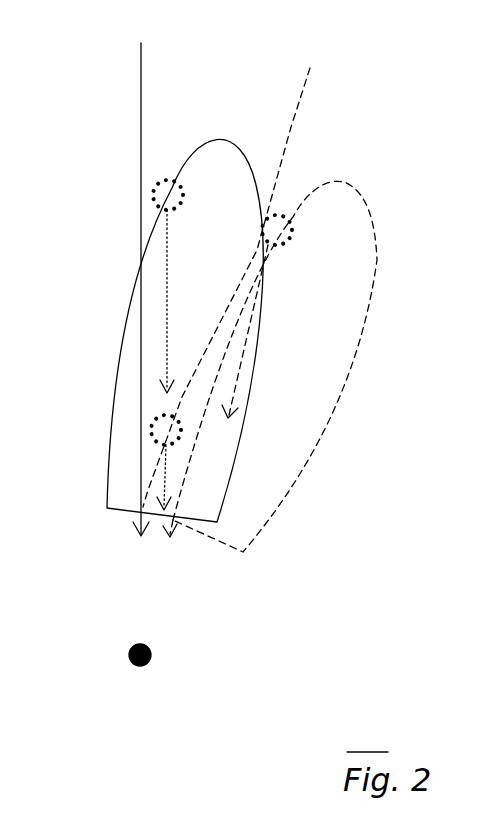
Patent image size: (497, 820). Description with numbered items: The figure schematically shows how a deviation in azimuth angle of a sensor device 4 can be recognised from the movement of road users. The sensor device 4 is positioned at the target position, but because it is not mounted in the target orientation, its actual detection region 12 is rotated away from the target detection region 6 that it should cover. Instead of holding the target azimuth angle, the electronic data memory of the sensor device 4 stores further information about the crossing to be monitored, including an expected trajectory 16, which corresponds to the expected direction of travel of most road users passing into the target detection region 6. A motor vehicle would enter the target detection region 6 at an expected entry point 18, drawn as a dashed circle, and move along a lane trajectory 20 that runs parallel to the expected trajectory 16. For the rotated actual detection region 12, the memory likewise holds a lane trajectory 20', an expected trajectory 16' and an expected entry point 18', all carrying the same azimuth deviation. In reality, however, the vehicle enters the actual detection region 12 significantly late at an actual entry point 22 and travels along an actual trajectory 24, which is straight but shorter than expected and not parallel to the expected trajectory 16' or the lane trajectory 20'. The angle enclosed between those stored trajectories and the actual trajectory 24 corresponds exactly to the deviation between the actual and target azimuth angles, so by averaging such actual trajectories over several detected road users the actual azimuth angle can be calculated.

The sensor device 4 is at (130, 667).
The target detection region 6 is at (110, 415).
The actual detection region 12 is at (353, 348).
The expected trajectory 16 is at (168, 276).
The expected trajectory 16' is at (259, 287).
The expected entry point 18 is at (114, 227).
The expected entry point 18' is at (352, 230).
The lane trajectory 20 is at (102, 301).
The lane trajectory 20' is at (262, 331).
The actual entry point 22 is at (152, 442).
The actual trajectory 24 is at (162, 481).